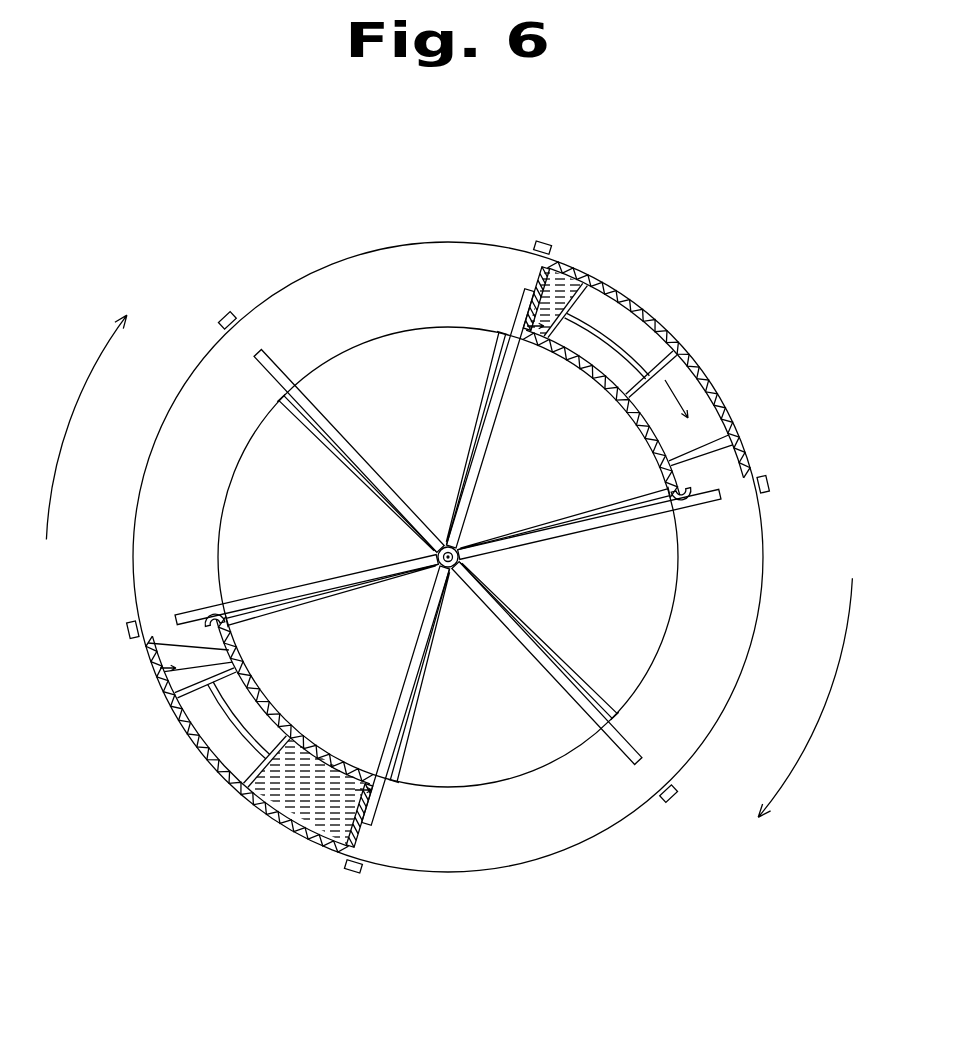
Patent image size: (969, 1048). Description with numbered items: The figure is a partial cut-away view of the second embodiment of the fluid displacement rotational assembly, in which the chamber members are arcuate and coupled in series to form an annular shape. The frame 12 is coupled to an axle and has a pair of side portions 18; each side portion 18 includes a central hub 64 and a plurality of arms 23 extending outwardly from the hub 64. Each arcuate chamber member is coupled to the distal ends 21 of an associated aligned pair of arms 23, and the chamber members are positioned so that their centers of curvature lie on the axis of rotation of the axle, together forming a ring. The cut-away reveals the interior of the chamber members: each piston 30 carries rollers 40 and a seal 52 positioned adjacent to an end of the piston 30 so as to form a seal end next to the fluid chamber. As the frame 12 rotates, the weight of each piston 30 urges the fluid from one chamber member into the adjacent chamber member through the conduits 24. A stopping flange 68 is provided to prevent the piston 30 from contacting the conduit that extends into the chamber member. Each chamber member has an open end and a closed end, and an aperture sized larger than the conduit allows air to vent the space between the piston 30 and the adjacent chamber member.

The frame 12 is at (345, 536).
The side portions 18 is at (324, 418).
The distal ends 21 is at (544, 242).
The arms 23 is at (448, 557).
The conduits 24 is at (503, 343).
The piston 30 is at (622, 328).
The rollers 40 is at (667, 330).
The seal 52 is at (572, 272).
The hub 64 is at (516, 573).
The stopping flange 68 is at (748, 455).